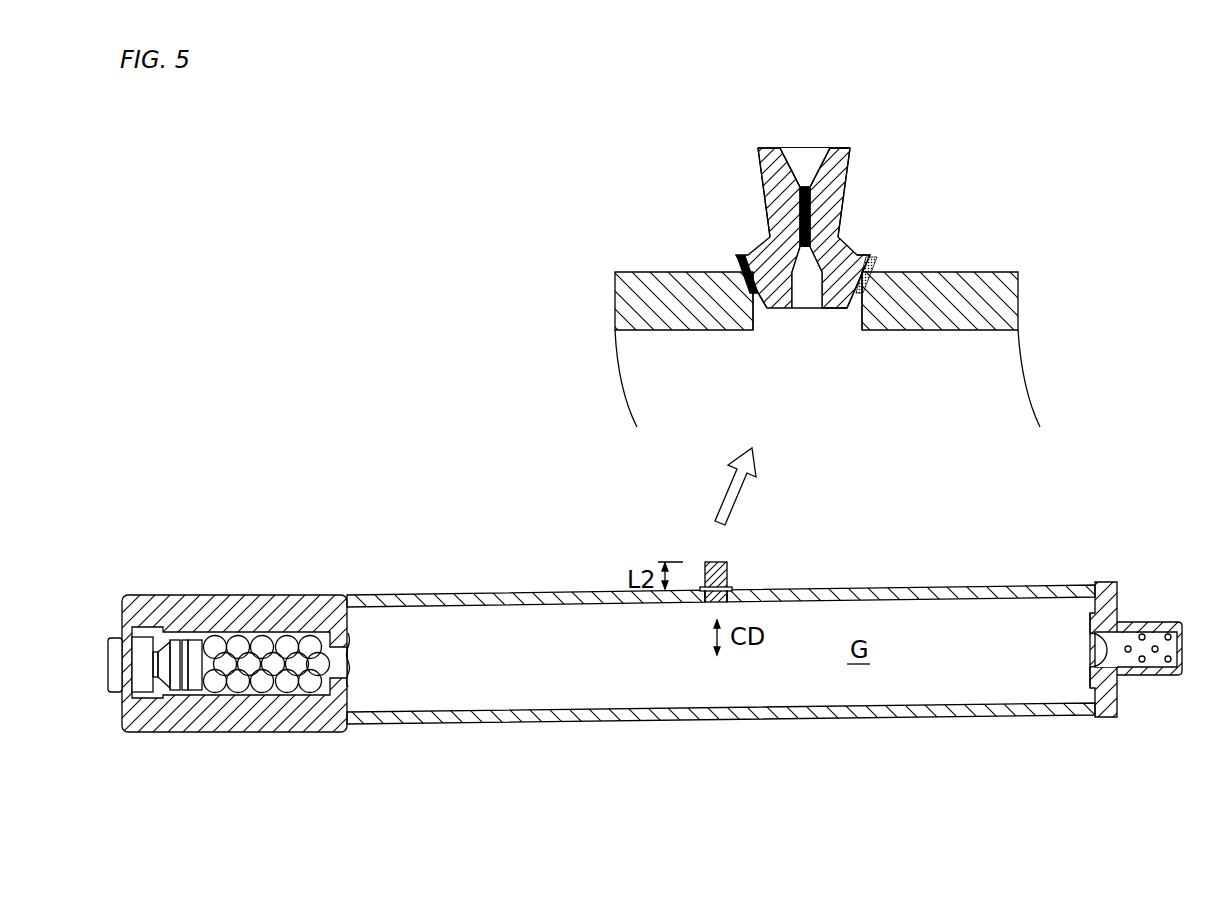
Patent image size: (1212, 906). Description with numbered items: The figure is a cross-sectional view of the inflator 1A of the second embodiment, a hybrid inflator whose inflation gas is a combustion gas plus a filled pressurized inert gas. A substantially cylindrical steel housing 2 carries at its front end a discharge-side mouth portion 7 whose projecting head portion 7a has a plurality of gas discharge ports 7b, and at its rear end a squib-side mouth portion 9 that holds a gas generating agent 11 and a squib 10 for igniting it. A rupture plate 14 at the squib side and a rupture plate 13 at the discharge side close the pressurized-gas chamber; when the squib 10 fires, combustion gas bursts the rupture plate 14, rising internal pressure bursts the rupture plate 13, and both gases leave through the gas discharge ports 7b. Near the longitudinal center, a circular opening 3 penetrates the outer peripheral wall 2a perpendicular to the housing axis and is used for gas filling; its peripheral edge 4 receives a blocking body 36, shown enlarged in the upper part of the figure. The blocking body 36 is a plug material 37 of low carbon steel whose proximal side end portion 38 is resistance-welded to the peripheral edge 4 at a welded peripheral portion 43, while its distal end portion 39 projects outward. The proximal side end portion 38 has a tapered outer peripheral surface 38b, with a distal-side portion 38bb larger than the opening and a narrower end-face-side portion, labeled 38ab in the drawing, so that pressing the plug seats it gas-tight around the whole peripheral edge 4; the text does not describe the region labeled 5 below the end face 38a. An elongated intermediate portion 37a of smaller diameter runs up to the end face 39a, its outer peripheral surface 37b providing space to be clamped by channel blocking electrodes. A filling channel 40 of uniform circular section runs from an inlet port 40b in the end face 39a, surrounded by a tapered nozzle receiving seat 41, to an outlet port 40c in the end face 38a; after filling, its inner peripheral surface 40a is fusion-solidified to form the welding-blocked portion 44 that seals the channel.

The inflator 1A is at (258, 481).
The housing 2 is at (483, 723).
The outer peripheral wall 2a is at (575, 600).
The opening 3 is at (755, 307).
The peripheral edge 4 is at (894, 251).
The gap 5 is at (769, 330).
The discharge-side mouth portion 7 is at (1110, 693).
The head portion 7a is at (1170, 675).
The gas discharge ports 7b is at (1168, 634).
The squib-side mouth portion 9 is at (247, 710).
The squib 10 is at (143, 682).
The gas generating agent 11 is at (262, 644).
The rupture plate 13 is at (1103, 647).
The rupture plate 14 is at (345, 660).
The blocking body 36 is at (744, 541).
The plug material 37 is at (857, 193).
The intermediate portion 37a is at (843, 173).
The outer peripheral surface 37b is at (770, 197).
The proximal side end portion 38 is at (922, 420).
The end face 38a is at (827, 310).
The outer peripheral surface 38b is at (857, 300).
The base inclined surface 38ab is at (753, 293).
The portion of outer peripheral surface 38bb is at (880, 234).
The distal end portion 39 is at (728, 135).
The end face 39a is at (833, 150).
The filling channel 40 is at (803, 173).
The inner peripheral surface 40a is at (790, 167).
The inlet port 40b is at (803, 157).
The outlet port 40c is at (805, 300).
The nozzle receiving seat 41 is at (830, 147).
The welded peripheral portion 43 is at (740, 260).
The welding-blocked portion 44 is at (800, 222).